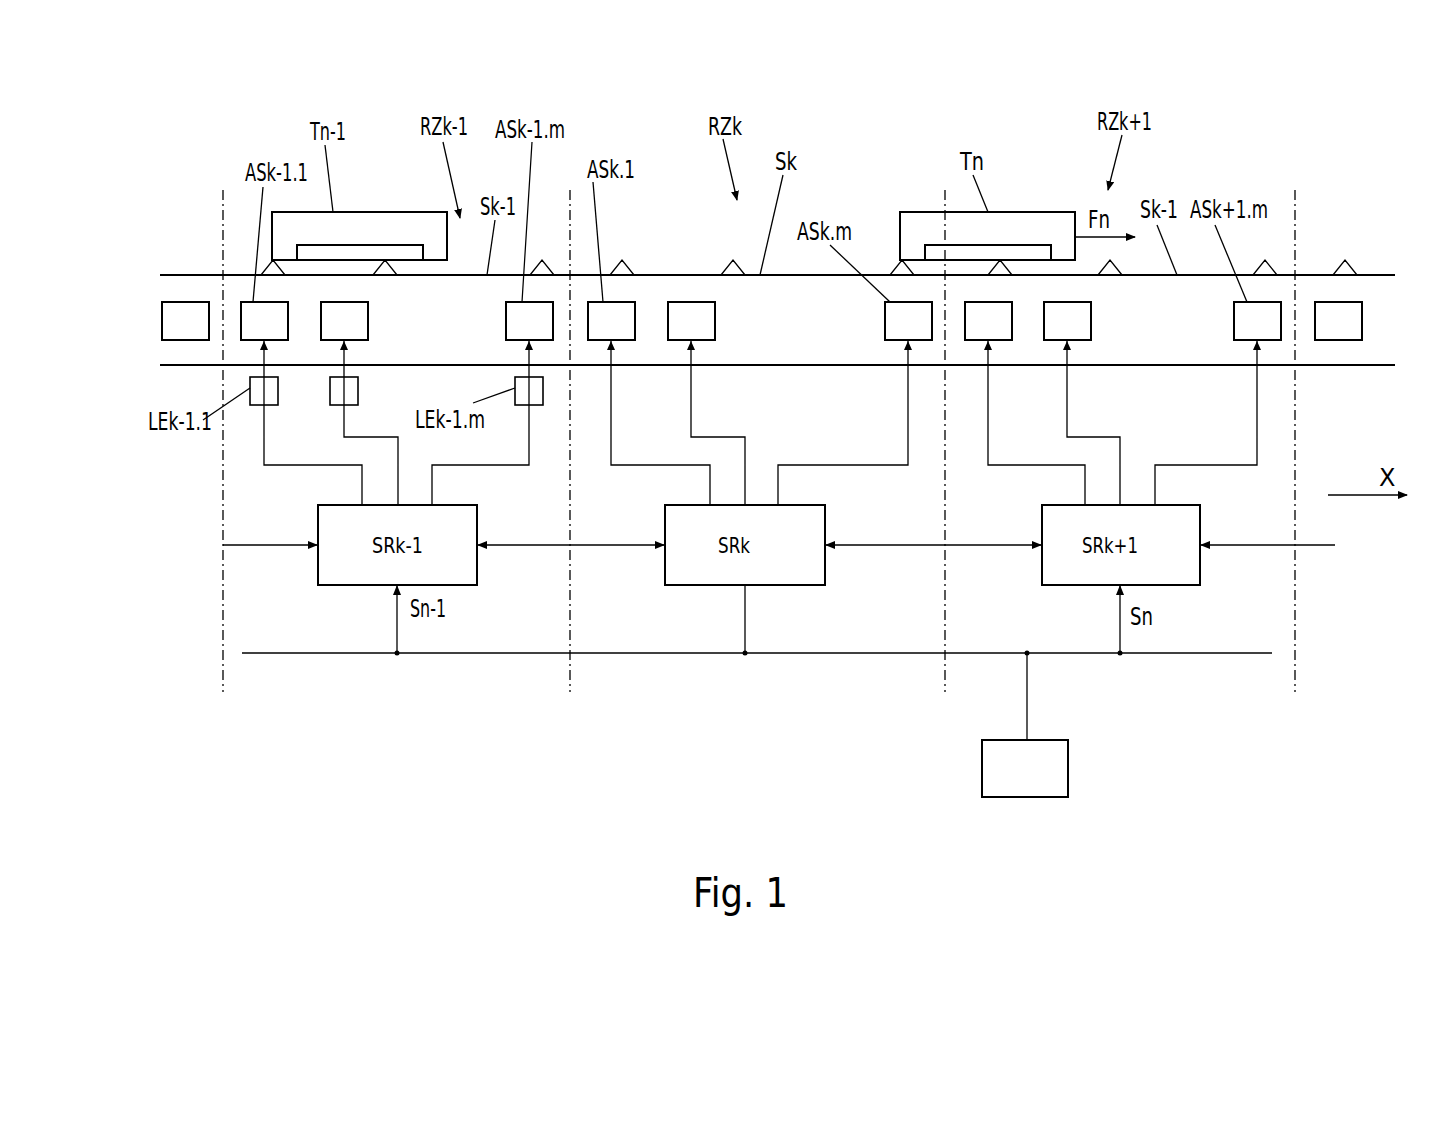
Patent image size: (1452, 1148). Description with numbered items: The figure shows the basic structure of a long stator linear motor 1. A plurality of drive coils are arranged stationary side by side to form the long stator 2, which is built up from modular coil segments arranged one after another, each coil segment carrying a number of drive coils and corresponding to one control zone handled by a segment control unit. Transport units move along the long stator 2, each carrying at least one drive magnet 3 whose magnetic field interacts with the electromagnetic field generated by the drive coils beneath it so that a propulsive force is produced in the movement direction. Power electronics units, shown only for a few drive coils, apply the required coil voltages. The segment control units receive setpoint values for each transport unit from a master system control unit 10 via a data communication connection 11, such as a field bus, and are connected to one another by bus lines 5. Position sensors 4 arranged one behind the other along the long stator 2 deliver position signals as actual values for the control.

The long stator linear motor 1 is at (1350, 188).
The long stator 2 is at (1332, 366).
The drive magnet 3 is at (347, 245).
The position sensors 4 is at (742, 270).
The communication bus between section controllers 5 is at (602, 548).
The system control unit 10 is at (1025, 725).
The data communication connection 11 is at (1215, 655).